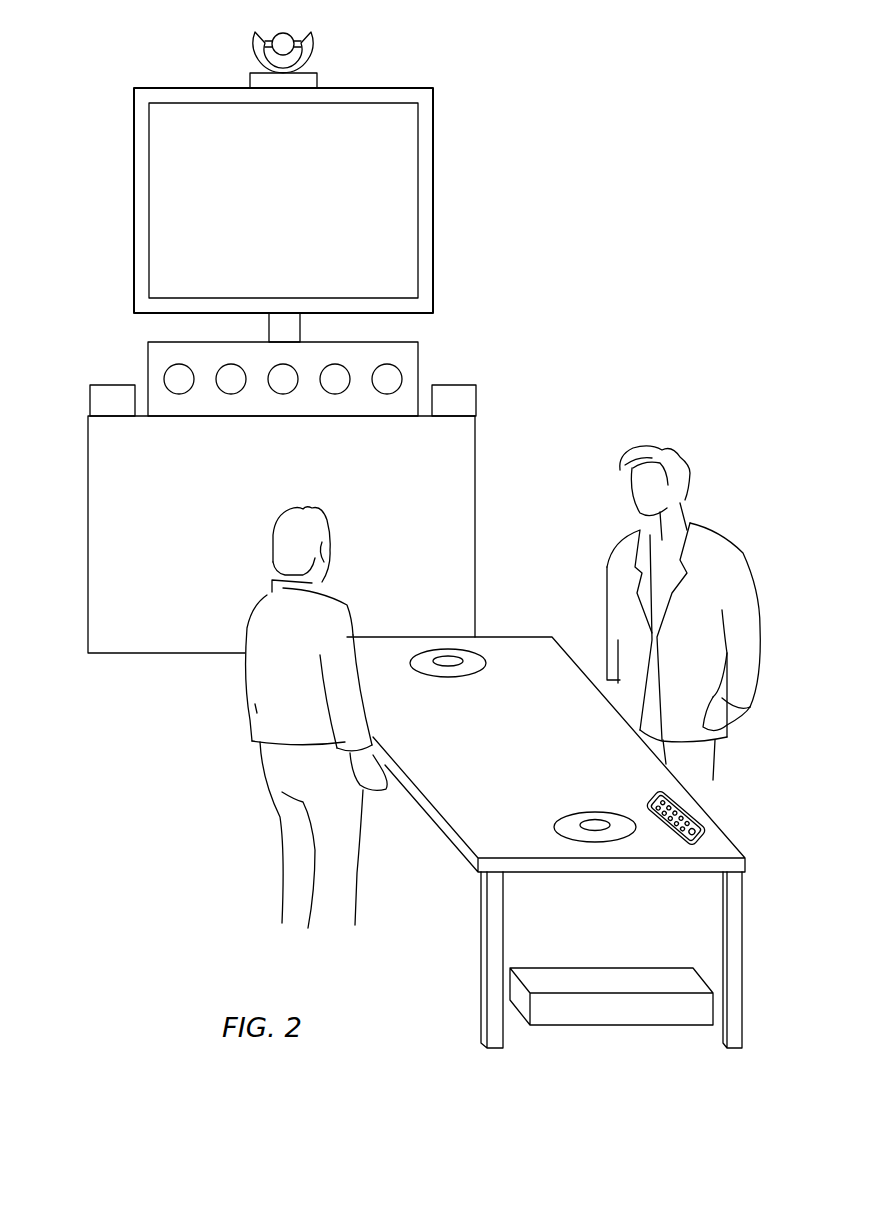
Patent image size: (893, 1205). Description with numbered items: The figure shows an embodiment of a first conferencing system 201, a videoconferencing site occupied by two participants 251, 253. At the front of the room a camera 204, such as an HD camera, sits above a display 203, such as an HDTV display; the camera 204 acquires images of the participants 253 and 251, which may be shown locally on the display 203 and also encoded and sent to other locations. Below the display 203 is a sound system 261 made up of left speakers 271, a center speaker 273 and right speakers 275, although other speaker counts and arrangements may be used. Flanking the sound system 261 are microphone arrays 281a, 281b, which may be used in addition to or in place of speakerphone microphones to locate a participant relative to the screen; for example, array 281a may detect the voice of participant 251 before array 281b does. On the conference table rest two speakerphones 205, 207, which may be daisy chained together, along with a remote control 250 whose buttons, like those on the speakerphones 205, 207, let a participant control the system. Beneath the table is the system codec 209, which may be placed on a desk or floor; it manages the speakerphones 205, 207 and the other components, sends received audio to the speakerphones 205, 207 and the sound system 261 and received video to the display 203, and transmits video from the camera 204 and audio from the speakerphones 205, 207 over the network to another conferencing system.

The first conferencing system 201 is at (642, 141).
The display 203 is at (433, 162).
The camera 204 is at (312, 42).
The speakerphone 205 is at (588, 812).
The speakerphone 207 is at (465, 677).
The system codec 209 is at (633, 1025).
The remote control 250 is at (655, 795).
The participant 251 is at (277, 522).
The participant 253 is at (687, 470).
The sound system 261 is at (418, 357).
The left speakers 271 is at (252, 393).
The center speaker 273 is at (305, 393).
The right speakers 275 is at (408, 393).
The microphone/microphone array 281a is at (107, 384).
The microphone/microphone array 281b is at (462, 385).